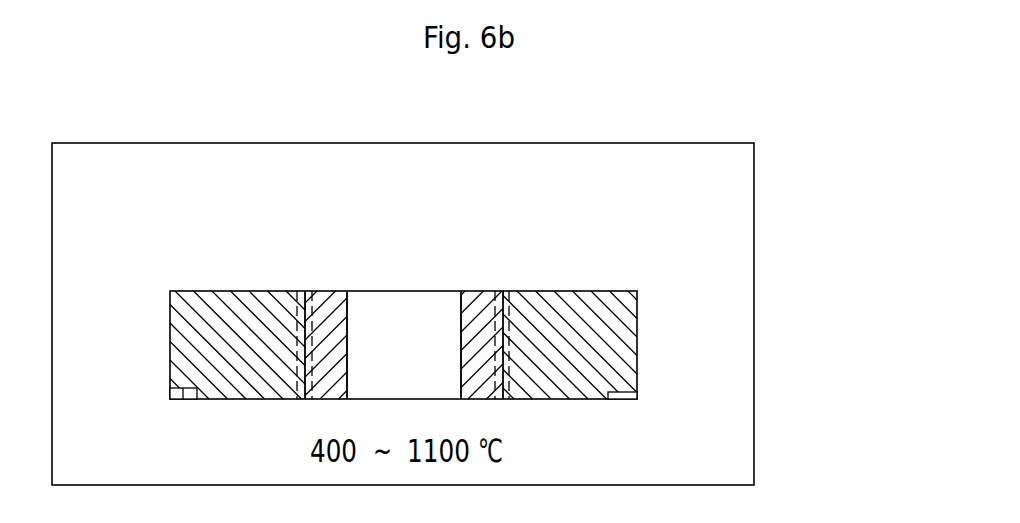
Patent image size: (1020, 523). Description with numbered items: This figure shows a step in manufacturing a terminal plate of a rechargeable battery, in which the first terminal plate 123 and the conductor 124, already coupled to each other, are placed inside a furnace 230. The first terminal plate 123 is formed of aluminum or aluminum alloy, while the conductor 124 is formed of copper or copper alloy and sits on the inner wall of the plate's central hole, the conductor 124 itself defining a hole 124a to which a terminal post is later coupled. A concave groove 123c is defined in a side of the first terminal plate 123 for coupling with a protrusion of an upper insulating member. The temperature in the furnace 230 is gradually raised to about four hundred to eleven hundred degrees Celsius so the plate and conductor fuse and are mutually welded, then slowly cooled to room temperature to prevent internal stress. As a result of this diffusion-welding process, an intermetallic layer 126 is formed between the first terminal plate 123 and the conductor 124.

The furnace 230 is at (754, 314).
The first terminal plate 123 is at (232, 315).
The conductor 124 is at (326, 312).
The hole 124a is at (460, 338).
The intermetallic layer 126 is at (503, 363).
The concave groove 123c is at (178, 398).